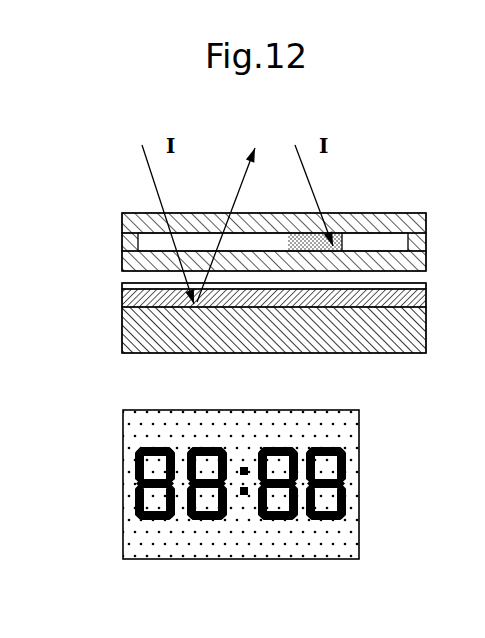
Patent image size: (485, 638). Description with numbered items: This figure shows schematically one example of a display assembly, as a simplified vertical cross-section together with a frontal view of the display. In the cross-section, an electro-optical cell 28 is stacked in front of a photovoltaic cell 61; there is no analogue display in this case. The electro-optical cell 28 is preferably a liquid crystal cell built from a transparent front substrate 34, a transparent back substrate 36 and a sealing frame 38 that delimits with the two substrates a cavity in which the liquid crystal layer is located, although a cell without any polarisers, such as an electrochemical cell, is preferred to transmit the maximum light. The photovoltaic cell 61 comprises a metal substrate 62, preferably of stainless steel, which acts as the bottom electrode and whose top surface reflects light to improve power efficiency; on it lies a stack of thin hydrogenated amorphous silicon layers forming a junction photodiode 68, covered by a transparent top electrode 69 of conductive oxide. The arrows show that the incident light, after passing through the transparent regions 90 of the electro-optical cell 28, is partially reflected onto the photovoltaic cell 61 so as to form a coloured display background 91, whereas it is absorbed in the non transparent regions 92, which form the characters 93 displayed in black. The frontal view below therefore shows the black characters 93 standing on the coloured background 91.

The electro-optical cell 28 is at (274, 219).
The transparent front substrate 34 is at (130, 223).
The sealing frame 38 is at (244, 207).
The transparent back substrate 36 is at (130, 258).
The transparent regions 90 is at (213, 243).
The non transparent regions 92 is at (303, 242).
The photovoltaic cell 61 is at (274, 315).
The transparent top electrode 69 is at (133, 287).
The junction photodiode 68 is at (130, 298).
The metal substrate 62 is at (130, 332).
The coloured display background 91 is at (211, 484).
The characters 93 is at (135, 492).